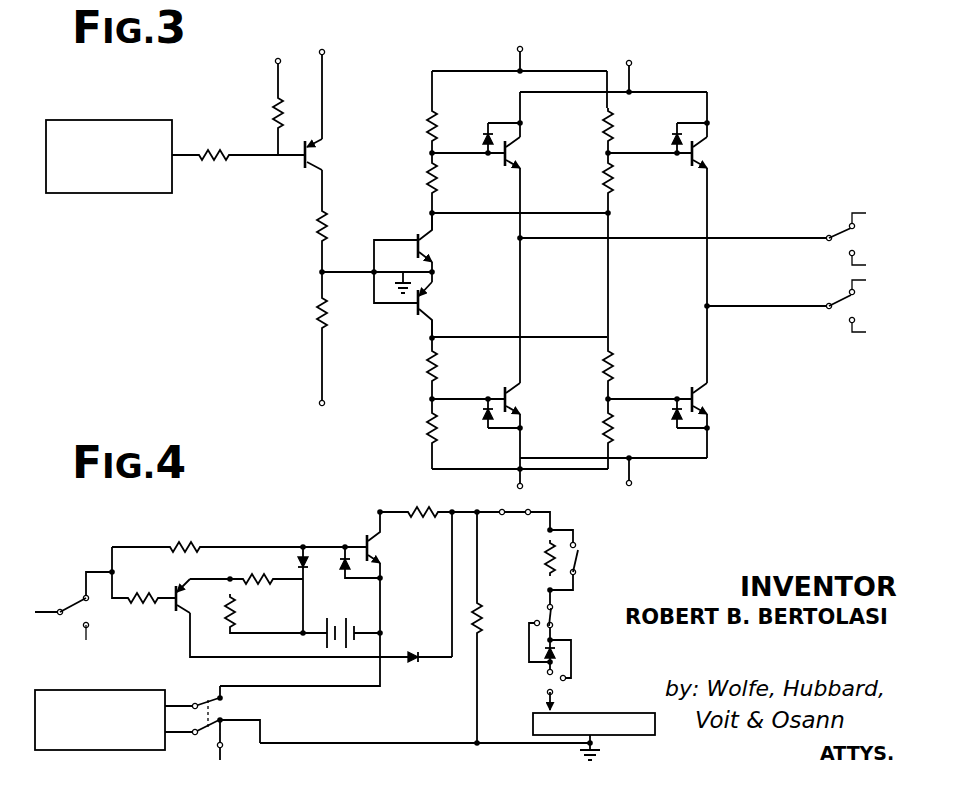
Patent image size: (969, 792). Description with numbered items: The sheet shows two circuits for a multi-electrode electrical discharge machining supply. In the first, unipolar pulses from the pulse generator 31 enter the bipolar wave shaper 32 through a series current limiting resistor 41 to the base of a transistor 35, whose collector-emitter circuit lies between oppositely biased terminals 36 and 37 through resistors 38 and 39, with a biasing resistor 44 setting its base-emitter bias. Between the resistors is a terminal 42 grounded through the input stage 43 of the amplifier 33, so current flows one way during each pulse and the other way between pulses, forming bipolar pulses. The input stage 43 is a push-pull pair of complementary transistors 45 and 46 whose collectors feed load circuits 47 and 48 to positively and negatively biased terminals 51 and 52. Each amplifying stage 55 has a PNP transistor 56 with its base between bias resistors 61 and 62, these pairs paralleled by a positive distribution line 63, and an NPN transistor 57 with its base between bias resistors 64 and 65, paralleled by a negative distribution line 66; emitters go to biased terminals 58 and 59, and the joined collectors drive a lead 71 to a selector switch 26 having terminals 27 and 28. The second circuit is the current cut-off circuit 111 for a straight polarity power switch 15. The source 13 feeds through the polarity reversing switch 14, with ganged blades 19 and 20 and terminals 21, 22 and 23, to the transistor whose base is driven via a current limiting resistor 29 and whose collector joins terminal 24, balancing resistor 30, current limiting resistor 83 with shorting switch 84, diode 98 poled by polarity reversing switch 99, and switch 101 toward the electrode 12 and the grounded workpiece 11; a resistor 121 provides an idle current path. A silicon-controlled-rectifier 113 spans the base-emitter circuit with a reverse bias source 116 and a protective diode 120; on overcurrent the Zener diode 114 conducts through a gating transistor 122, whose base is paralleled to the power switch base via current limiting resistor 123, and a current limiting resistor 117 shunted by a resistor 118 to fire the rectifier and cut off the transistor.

In FIG. 4, the workpiece 11 is at (617, 712).
In FIG. 4, the electrode 12 is at (556, 704).
In FIG. 4, the D.C. power or high current source 13 is at (80, 690).
In FIG. 4, the polarity reversing switch 14 is at (185, 720).
In FIG. 4, the straight polarity power switch 15 is at (376, 548).
In FIG. 4, the contact blade 19 is at (203, 700).
In FIG. 4, the contact blade 20 is at (200, 733).
In FIG. 4, the contact terminal 21 is at (224, 694).
In FIG. 4, the contact terminal 22 is at (224, 716).
In FIG. 4, the contact terminal 23 is at (228, 743).
In FIG. 4, the terminal 24 is at (396, 536).
In FIG. 3, the selector switch 26 is at (892, 335).
In FIG. 4, the selector switch 26 is at (90, 612).
In FIG. 3, the selector switch terminal 27 is at (848, 254).
In FIG. 4, the selector switch terminal 27 is at (83, 596).
In FIG. 3, the selector switch terminal 28 is at (847, 225).
In FIG. 4, the selector switch terminal 28 is at (84, 628).
In FIG. 4, the current limiting resistor 29 is at (180, 545).
In FIG. 4, the balancing resistor 30 is at (415, 506).
In FIG. 3, the pulse generator 31 is at (96, 120).
In FIG. 3, the bipolar wave shaper 32 is at (296, 178).
In FIG. 3, the amplifier 33 is at (575, 290).
In FIG. 3, the transistor 35 is at (312, 160).
In FIG. 3, the terminal 36 is at (326, 55).
In FIG. 3, the terminal 37 is at (326, 400).
In FIG. 3, the resistor 38 is at (316, 234).
In FIG. 3, the resistor 39 is at (316, 327).
In FIG. 3, the series current limiting resistor 41 is at (200, 160).
In FIG. 3, the terminal 42 is at (317, 274).
In FIG. 3, the input stage 43 is at (449, 277).
In FIG. 3, the biasing resistor 44 is at (272, 114).
In FIG. 3, the NPN transistor 45 is at (417, 236).
In FIG. 3, the PNP transistor 46 is at (418, 318).
In FIG. 3, the load circuit 47 is at (422, 132).
In FIG. 3, the load circuit 48 is at (424, 397).
In FIG. 3, the terminal 51 is at (516, 51).
In FIG. 3, the terminal 52 is at (516, 488).
In FIG. 3, the amplifying stage 55 is at (527, 272).
In FIG. 3, the PNP transistor 56 is at (512, 153).
In FIG. 3, the NPN transistor 57 is at (514, 400).
In FIG. 3, the terminal 58 is at (633, 66).
In FIG. 3, the terminal 59 is at (633, 478).
In FIG. 3, the bias resistor 61 is at (437, 127).
In FIG. 3, the bias resistor 62 is at (458, 182).
In FIG. 3, the positive distribution line 63 is at (548, 213).
In FIG. 3, the bias resistor 64 is at (440, 377).
In FIG. 3, the bias resistor 65 is at (450, 427).
In FIG. 3, the negative distribution line 66 is at (482, 336).
In FIG. 3, the lead 71 is at (620, 238).
In FIG. 4, the current limiting resistor 83 is at (546, 572).
In FIG. 4, the shorting switch 84 is at (580, 560).
In FIG. 4, the diode 98 is at (574, 650).
In FIG. 4, the polarity reversing switch 99 is at (530, 650).
In FIG. 4, the switch 101 is at (513, 517).
In FIG. 4, the current cut-off circuit 111 is at (178, 642).
In FIG. 4, the silicon-controlled-rectifier 113 is at (297, 560).
In FIG. 4, the Zener diode 114 is at (410, 665).
In FIG. 4, the reverse bias source 116 is at (333, 626).
In FIG. 4, the current limiting resistor 117 is at (250, 575).
In FIG. 4, the resistor 118 is at (236, 612).
In FIG. 4, the diode 120 is at (345, 572).
In FIG. 4, the resistor 121 is at (482, 636).
In FIG. 4, the gating transistor 122 is at (186, 600).
In FIG. 4, the current limiting resistor 123 is at (140, 592).